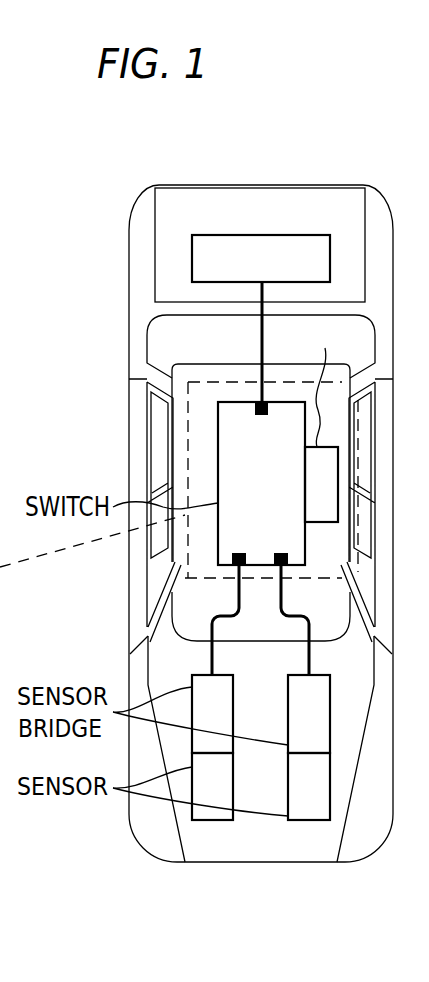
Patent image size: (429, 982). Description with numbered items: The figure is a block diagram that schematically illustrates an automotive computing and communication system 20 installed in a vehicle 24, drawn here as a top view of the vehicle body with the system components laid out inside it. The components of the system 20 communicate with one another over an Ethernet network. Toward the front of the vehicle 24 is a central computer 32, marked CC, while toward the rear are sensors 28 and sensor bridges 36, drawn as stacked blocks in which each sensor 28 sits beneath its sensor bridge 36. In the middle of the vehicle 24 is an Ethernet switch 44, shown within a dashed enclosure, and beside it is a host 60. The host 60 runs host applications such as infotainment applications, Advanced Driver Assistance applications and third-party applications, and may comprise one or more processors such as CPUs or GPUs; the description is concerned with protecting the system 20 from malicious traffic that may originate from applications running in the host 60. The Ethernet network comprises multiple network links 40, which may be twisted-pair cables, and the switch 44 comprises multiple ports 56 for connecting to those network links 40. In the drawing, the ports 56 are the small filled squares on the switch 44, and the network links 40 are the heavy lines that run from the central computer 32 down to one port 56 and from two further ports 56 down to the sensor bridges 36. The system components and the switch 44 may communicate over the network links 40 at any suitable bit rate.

The automotive computing and communication system 20 is at (285, 106).
The vehicle 24 is at (255, 862).
The sensors 28 is at (288, 801).
The central computer (CC) 32 is at (214, 235).
The sensor bridges 36 is at (288, 723).
The network links 40 is at (262, 294).
The Ethernet switch 44 is at (275, 461).
The ports 56 is at (255, 408).
The host 60 is at (330, 500).